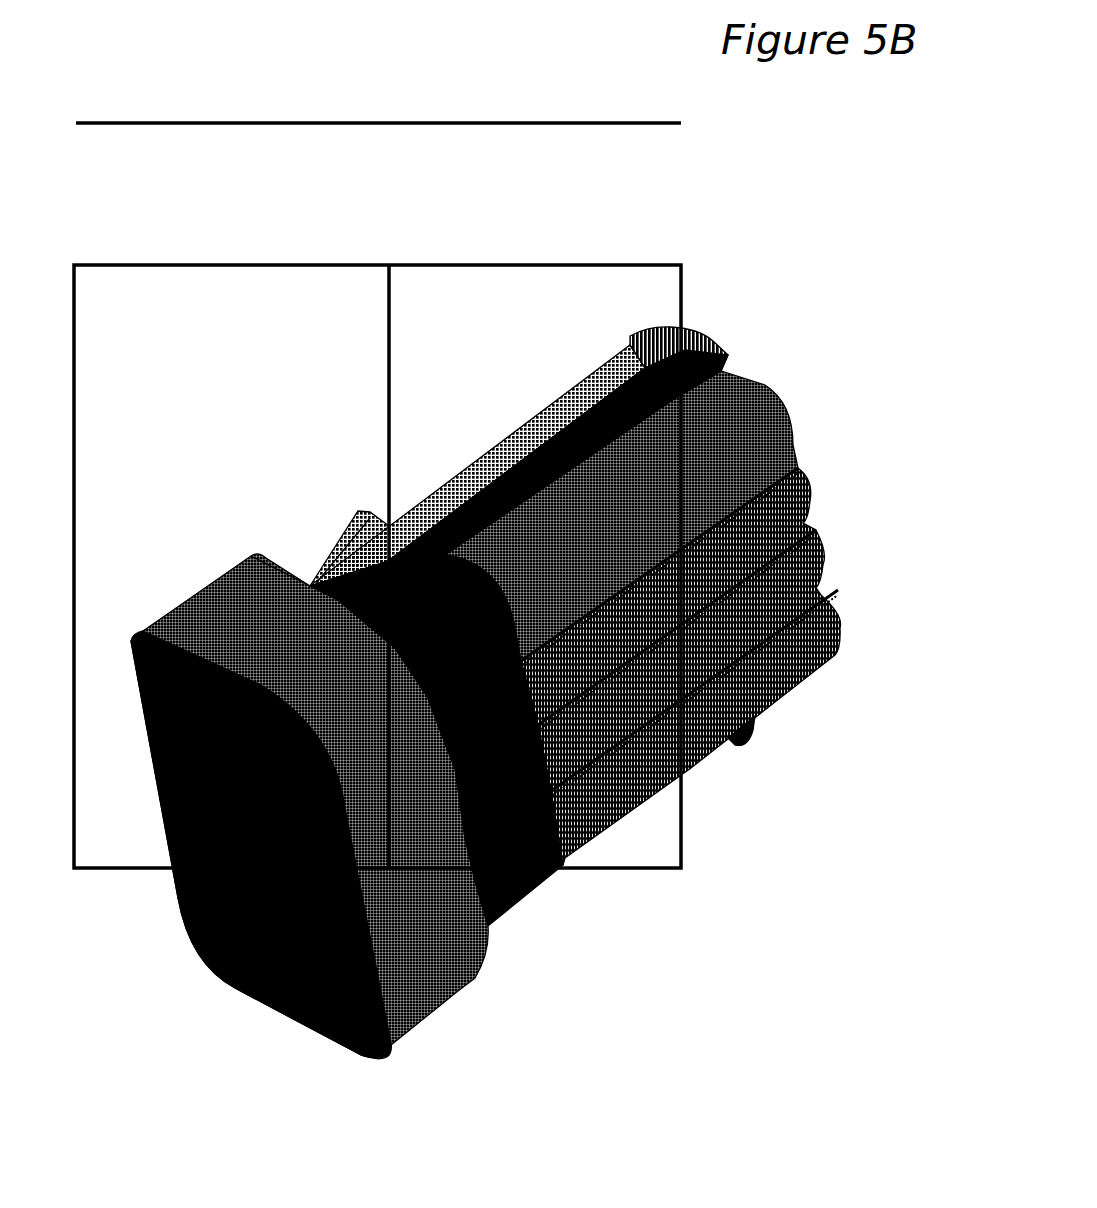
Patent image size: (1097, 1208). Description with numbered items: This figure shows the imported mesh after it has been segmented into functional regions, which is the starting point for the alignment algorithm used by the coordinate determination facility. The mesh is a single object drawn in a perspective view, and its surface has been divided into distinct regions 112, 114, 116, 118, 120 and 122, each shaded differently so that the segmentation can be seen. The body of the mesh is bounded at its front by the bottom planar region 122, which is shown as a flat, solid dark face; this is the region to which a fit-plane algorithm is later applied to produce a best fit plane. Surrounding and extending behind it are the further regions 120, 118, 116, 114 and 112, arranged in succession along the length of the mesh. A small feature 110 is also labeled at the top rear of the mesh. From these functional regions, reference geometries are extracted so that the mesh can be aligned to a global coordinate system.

The top tab 110 is at (717, 343).
The functional region 112 is at (765, 382).
The functional region 114 is at (787, 477).
The functional region 116 is at (323, 522).
The functional region 118 is at (503, 905).
The functional region 120 is at (447, 988).
The bottom planar region 122 is at (227, 980).